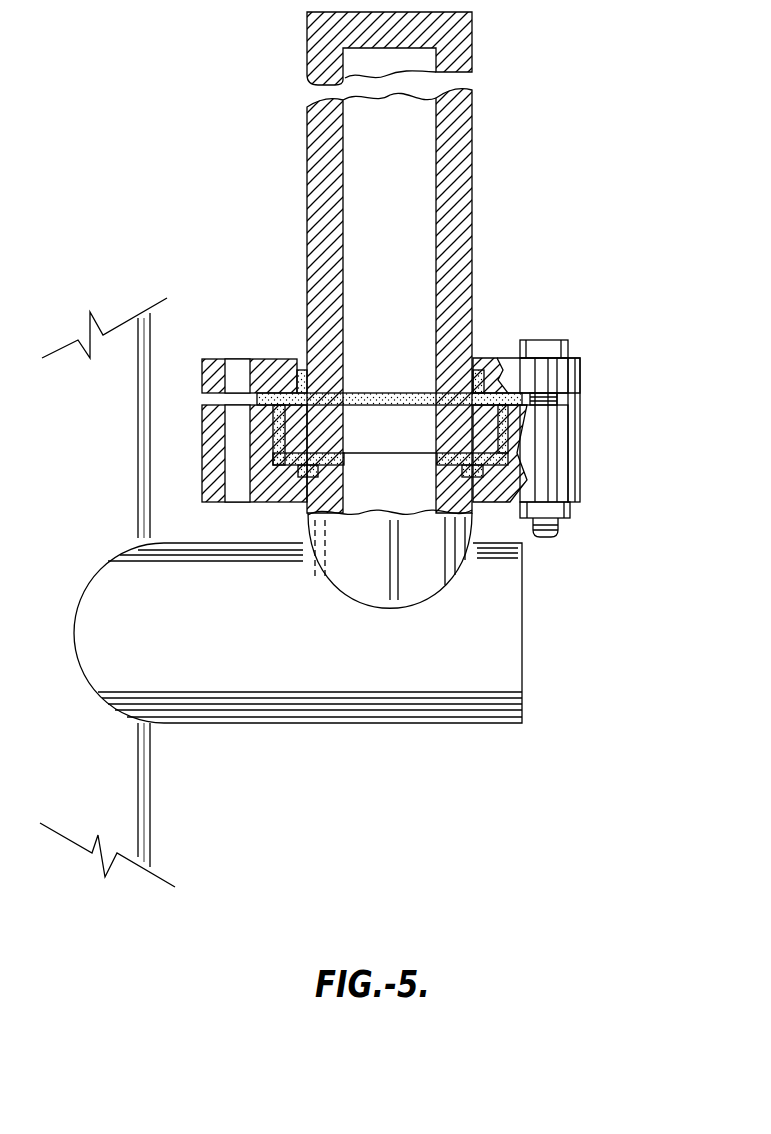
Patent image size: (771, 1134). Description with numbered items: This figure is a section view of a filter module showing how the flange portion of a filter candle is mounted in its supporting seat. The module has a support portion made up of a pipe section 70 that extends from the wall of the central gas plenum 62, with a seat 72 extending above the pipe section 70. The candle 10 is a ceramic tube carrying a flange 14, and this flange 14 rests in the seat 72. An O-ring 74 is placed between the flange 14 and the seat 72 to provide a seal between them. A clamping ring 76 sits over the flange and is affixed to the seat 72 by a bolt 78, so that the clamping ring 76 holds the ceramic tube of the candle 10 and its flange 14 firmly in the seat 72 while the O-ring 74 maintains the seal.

The candle 10 is at (494, 139).
The flange 14 is at (523, 390).
The central gas plenum 62 is at (78, 402).
The pipe section 70 is at (442, 697).
The seat 72 is at (290, 503).
The O-ring 74 is at (475, 468).
The clamping ring 76 is at (580, 377).
The bolt 78 is at (570, 350).